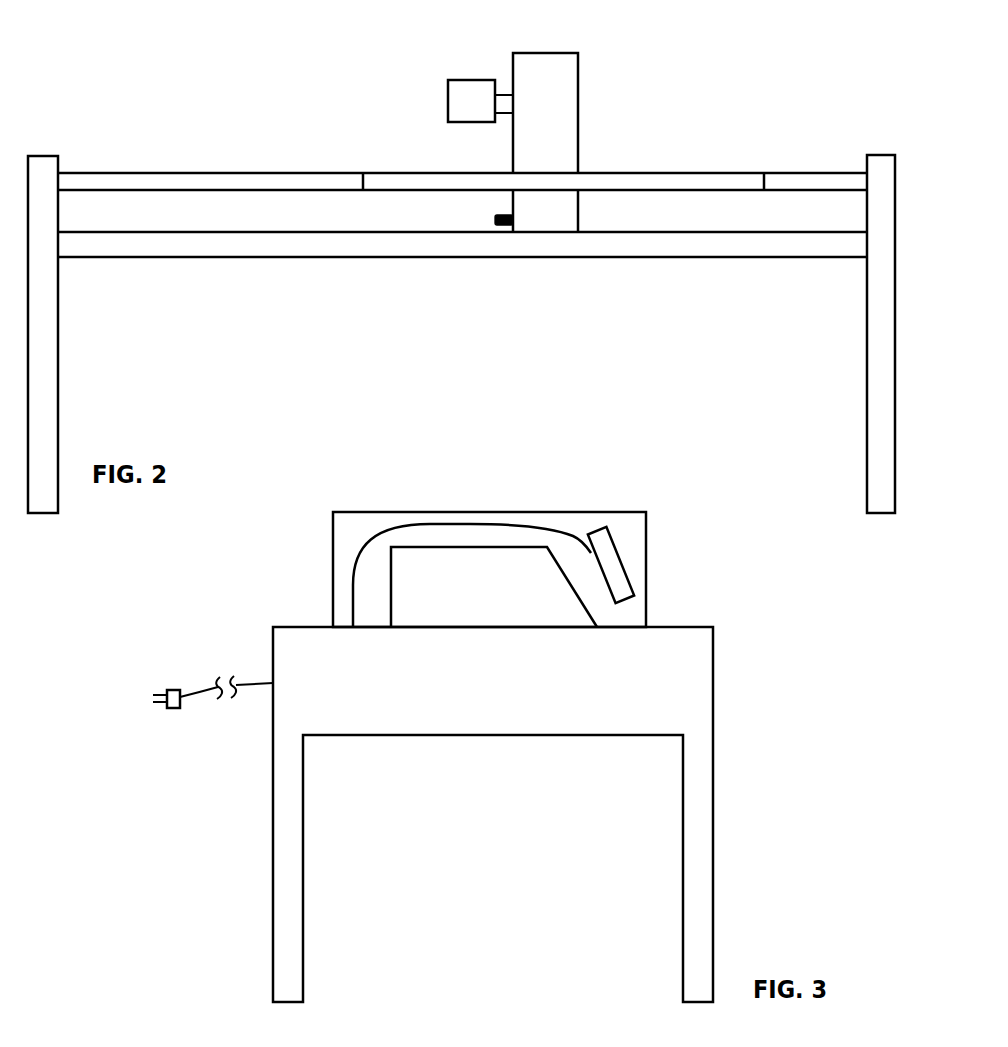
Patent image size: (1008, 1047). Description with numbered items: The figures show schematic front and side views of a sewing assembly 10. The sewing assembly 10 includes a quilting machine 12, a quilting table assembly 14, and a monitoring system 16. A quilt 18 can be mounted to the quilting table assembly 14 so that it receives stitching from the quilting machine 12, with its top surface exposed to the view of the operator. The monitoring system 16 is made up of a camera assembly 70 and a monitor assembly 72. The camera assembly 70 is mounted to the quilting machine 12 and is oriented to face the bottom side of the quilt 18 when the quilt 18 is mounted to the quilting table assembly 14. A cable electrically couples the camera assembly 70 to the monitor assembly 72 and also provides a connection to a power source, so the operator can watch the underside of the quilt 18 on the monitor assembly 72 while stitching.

In FIG. 2, the sewing assembly 10 is at (708, 73).
In FIG. 3, the sewing assembly 10 is at (780, 599).
In FIG. 2, the quilting machine 12 is at (585, 55).
In FIG. 3, the quilting machine 12 is at (586, 504).
In FIG. 2, the quilting table assembly 14 is at (815, 158).
In FIG. 3, the quilting table assembly 14 is at (718, 668).
In FIG. 2, the monitoring system 16 is at (443, 78).
In FIG. 3, the monitoring system 16 is at (626, 557).
In FIG. 2, the quilt 18 is at (714, 158).
In FIG. 2, the camera assembly 70 is at (490, 214).
In FIG. 2, the monitor assembly 72 is at (444, 112).
In FIG. 3, the monitor assembly 72 is at (638, 578).